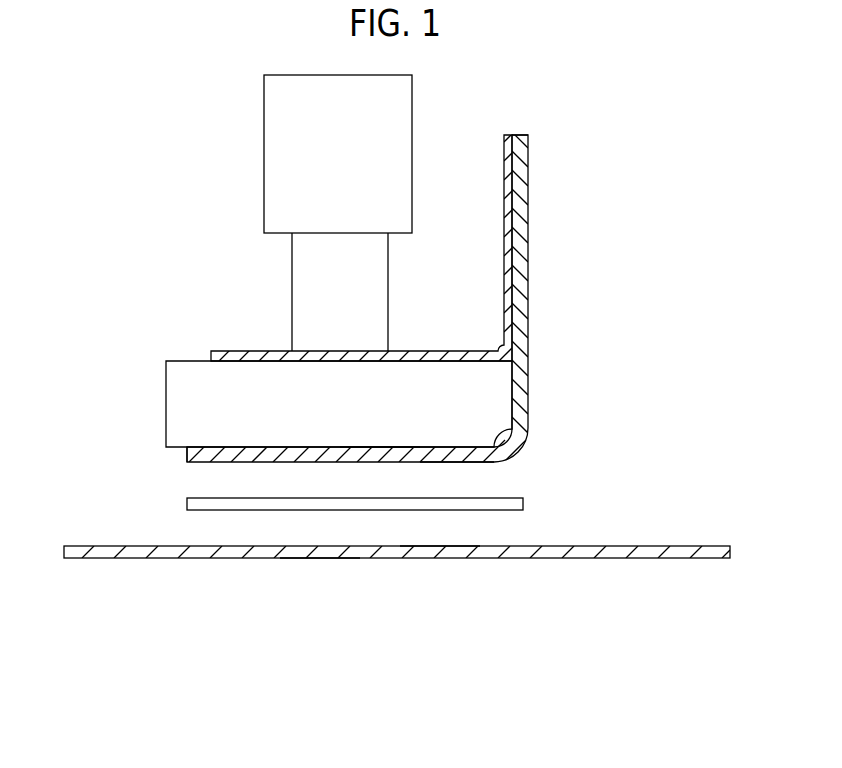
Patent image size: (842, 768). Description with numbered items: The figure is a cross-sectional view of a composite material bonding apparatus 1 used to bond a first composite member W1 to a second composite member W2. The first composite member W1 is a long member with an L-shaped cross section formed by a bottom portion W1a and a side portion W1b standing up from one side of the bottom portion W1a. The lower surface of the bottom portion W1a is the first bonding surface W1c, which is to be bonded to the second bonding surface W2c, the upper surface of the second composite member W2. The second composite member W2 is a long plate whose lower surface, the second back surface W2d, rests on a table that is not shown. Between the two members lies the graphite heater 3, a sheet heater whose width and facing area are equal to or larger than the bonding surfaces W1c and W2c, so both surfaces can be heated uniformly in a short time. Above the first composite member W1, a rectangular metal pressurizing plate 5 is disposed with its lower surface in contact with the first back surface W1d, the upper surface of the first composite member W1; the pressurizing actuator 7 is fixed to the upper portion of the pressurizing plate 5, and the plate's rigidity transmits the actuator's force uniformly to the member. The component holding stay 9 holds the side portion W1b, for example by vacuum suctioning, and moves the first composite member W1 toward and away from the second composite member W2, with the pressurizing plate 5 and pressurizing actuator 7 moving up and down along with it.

The composite material bonding apparatus 1 is at (122, 141).
The graphite heater 3 is at (187, 504).
The pressurizing plate 5 is at (166, 404).
The pressurizing actuator 7 is at (264, 154).
The component holding stay 9 is at (504, 272).
The first composite member W1 is at (528, 391).
The bottom portion W1a is at (187, 456).
The side portion W1b is at (518, 135).
The first bonding surface W1c is at (470, 463).
The first back surface W1d is at (381, 447).
The second composite member W2 is at (672, 546).
The second bonding surface W2c is at (428, 547).
The second back surface W2d is at (320, 559).